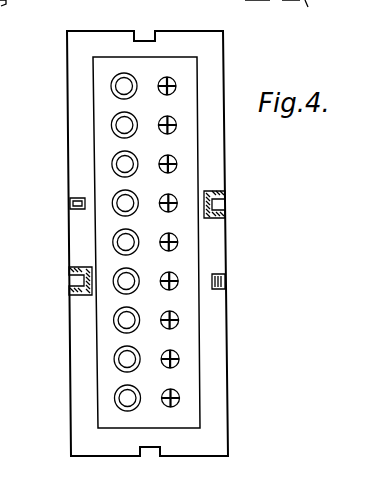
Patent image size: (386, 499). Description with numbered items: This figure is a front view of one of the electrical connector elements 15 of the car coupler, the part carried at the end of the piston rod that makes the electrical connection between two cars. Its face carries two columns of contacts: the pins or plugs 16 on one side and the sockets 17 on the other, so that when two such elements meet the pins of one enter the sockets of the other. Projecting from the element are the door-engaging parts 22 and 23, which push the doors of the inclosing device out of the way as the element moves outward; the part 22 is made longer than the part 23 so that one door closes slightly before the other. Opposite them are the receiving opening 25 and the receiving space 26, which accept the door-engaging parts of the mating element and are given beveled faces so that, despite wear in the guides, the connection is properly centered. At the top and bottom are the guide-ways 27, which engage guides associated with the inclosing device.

The electrical connector element 15 is at (107, 383).
The pins or plugs 16 is at (173, 93).
The sockets 17 is at (117, 191).
The door-engaging part 22 is at (242, 290).
The door-engaging part 23 is at (71, 204).
The receiving opening 25 is at (78, 283).
The receiving space 26 is at (218, 204).
The guide-ways 27 is at (144, 38).